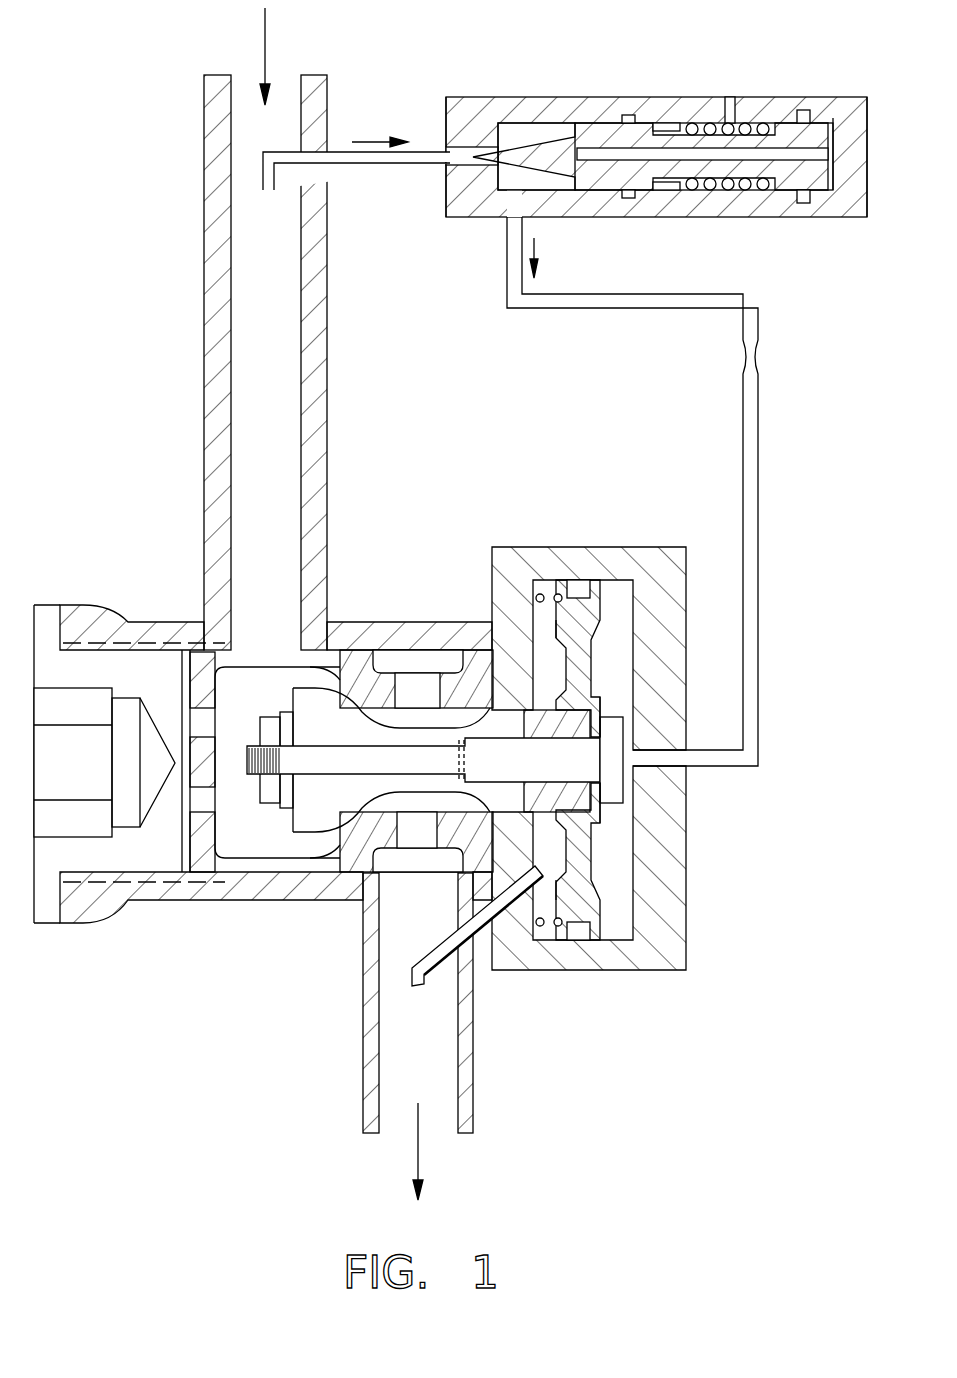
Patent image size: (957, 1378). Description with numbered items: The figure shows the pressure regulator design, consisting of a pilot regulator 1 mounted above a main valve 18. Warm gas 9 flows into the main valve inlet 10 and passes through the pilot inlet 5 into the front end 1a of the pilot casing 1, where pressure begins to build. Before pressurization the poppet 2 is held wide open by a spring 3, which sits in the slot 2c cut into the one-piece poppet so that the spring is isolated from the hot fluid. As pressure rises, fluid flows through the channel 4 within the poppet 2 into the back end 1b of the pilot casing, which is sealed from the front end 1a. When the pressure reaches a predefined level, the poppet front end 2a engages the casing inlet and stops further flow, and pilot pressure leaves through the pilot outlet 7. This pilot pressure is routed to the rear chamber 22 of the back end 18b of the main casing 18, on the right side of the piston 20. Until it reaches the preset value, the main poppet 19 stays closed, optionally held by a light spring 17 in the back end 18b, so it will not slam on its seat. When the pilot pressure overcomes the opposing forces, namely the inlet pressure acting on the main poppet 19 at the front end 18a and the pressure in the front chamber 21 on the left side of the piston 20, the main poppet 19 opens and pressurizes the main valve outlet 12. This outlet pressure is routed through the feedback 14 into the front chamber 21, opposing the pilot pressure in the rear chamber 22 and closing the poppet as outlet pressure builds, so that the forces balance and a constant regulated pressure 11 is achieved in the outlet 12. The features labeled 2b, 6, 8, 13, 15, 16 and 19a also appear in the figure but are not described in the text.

The pilot regulator 1 is at (478, 104).
The front end of the pilot casing 1a is at (516, 118).
The back end of the pilot casing 1b is at (848, 118).
The poppet 2 is at (637, 133).
The poppet front end 2a is at (530, 133).
The upper stop shoulder 2b is at (803, 112).
The slot 2c is at (712, 200).
The spring 3 is at (758, 198).
The channel 4 is at (583, 140).
The pilot inlet 5 is at (355, 165).
The flow direction arrow 6 is at (365, 140).
The pilot outlet 7 is at (507, 290).
The flow direction arrow 8 is at (535, 243).
The warm gas 9 is at (263, 28).
The main valve inlet 10 is at (247, 90).
The regulated pressure 11 is at (420, 1158).
The main valve outlet 12 is at (400, 1118).
The channel 13 is at (660, 750).
The feedback 14 is at (422, 980).
The seal ring 15 is at (527, 905).
The stop 16 is at (585, 940).
The light spring 17 is at (540, 596).
The main valve 18 is at (177, 895).
The front end of the main casing 18a is at (268, 711).
The back end of the main casing 18b is at (640, 568).
The main poppet 19 is at (315, 788).
The bearing 19a is at (500, 723).
The piston 20 is at (585, 893).
The front chamber 21 is at (548, 892).
The rear chamber 22 is at (615, 845).